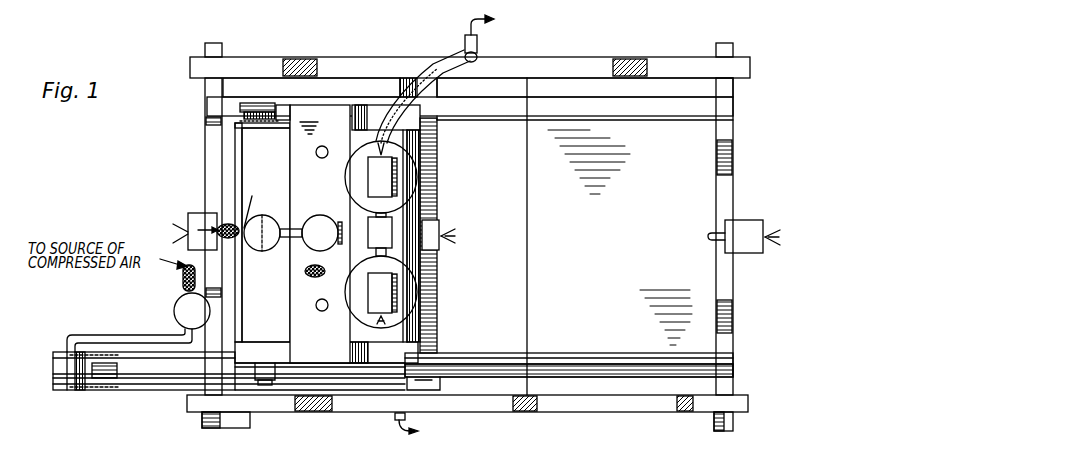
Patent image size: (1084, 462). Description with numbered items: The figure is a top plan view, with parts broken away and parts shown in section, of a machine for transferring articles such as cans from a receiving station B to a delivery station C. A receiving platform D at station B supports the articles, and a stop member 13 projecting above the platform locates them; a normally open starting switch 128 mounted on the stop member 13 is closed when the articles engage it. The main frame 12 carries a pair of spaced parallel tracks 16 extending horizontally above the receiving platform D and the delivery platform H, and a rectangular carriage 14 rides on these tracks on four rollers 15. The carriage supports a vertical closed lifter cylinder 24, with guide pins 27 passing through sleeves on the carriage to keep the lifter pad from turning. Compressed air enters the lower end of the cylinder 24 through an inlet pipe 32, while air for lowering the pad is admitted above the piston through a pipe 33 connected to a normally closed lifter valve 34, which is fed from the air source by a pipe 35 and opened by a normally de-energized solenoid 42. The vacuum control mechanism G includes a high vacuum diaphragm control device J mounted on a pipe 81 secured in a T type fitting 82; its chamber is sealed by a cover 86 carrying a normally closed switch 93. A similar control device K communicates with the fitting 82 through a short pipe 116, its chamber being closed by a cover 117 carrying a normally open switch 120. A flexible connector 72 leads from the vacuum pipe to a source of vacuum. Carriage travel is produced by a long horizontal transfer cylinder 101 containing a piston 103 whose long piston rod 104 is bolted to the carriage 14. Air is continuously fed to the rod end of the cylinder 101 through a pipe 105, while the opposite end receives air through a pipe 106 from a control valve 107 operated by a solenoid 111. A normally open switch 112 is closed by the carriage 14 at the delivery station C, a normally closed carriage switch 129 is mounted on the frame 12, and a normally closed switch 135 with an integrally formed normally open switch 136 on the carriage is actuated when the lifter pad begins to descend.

The frame 12 is at (645, 400).
The stop member 13 is at (430, 268).
The carriage 14 is at (312, 120).
The rollers 15 is at (257, 103).
The tracks 16 is at (647, 118).
The cylinder 24 is at (322, 233).
The guide pins 27 is at (326, 147).
The inlet pipe 32 is at (305, 274).
The pipe 33 is at (288, 231).
The lifter valve 34 is at (263, 242).
The pipe 35 is at (230, 217).
The electric solenoid 42 is at (264, 244).
The flexible connector 72 is at (433, 74).
The pipe 81 is at (322, 272).
The T type fitting 82 is at (380, 234).
The cover 86 is at (403, 297).
The electric switch 93 is at (382, 298).
The transfer cylinder 101 is at (140, 373).
The piston 103 is at (82, 372).
The piston rod 104 is at (102, 374).
The pipe 105 is at (396, 416).
The pipe 106 is at (115, 336).
The control valve 107 is at (188, 298).
The electric solenoid 111 is at (172, 311).
The electric switch 112 is at (744, 236).
The pipe 116 is at (358, 213).
The cover 117 is at (400, 162).
The electric switch 120 is at (368, 178).
The starting switch 128 is at (428, 227).
The carriage switch 129 is at (190, 217).
The switch 135 is at (266, 235).
The switch 136 is at (260, 201).
The receiving station B is at (371, 90).
The delivery station C is at (650, 91).
The receiving platform D is at (230, 155).
The vacuum control mechanism G is at (393, 213).
The delivery platform H is at (620, 237).
The high vacuum diaphragm control device J is at (403, 305).
The control device K is at (412, 180).